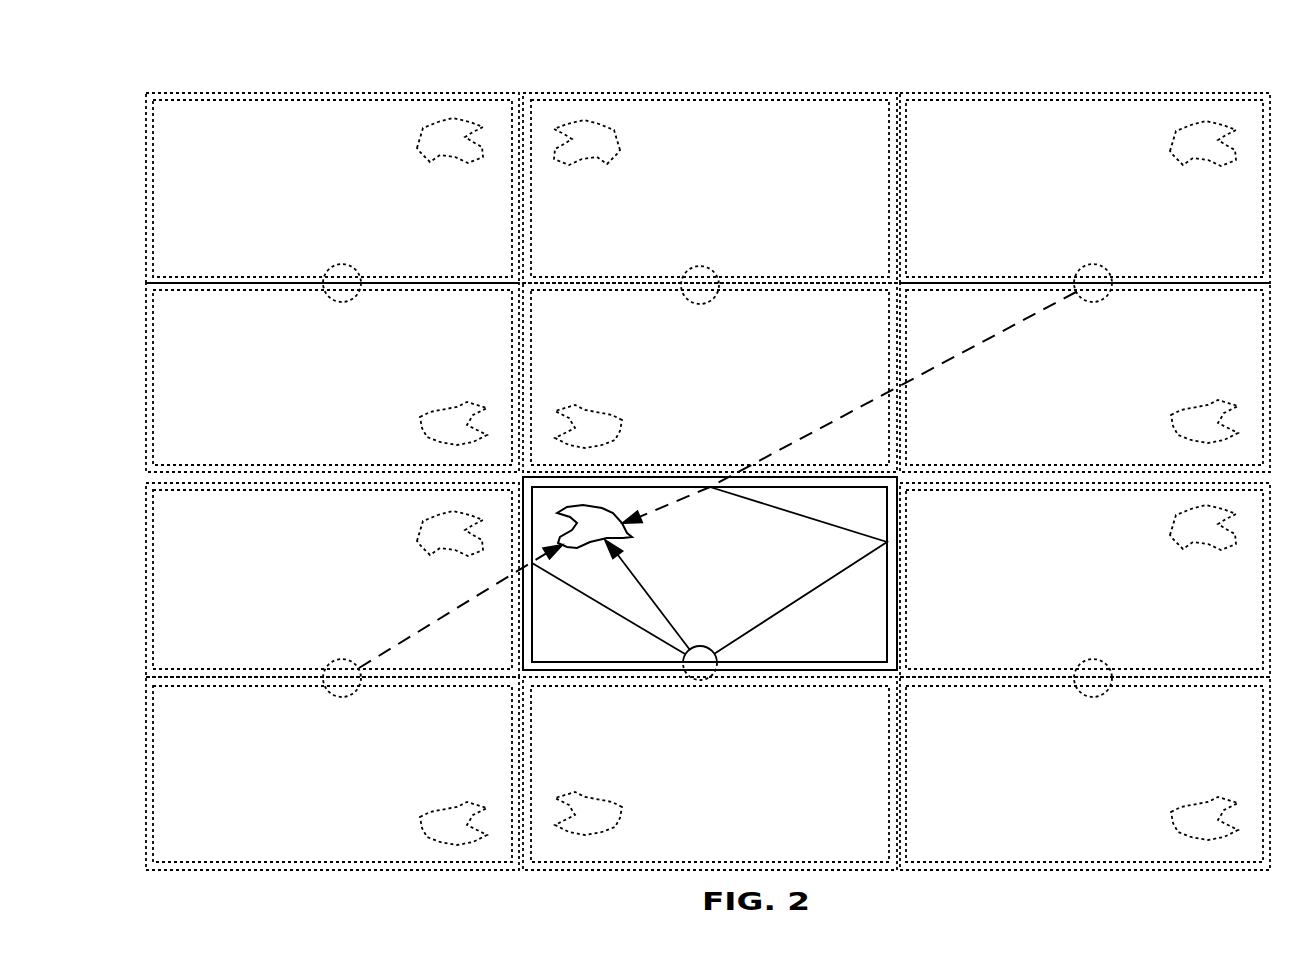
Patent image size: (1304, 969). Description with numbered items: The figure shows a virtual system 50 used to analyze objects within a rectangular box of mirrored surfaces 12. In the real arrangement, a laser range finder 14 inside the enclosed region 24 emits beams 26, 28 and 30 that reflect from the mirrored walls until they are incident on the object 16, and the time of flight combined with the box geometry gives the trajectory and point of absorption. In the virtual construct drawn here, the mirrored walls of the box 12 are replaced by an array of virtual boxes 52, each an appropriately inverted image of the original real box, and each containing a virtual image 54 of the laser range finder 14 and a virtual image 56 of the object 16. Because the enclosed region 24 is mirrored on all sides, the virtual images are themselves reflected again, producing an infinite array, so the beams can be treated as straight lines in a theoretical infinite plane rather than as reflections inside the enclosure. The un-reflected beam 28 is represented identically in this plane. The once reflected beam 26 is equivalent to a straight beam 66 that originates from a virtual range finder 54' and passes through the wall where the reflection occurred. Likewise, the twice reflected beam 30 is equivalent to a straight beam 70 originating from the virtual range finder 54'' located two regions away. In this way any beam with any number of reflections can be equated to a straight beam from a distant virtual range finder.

The rectangular box of mirrored surfaces 12 is at (800, 662).
The laser range finder 14 is at (700, 647).
The object 16 is at (632, 537).
The enclosed region 24 is at (752, 549).
The once reflected beam 26 is at (585, 592).
The un-reflected beam 28 is at (637, 568).
The twice reflected beam 30 is at (805, 595).
The virtual system 50 is at (1145, 49).
The virtual box 52 is at (410, 277).
The virtual image of the laser range finder 54 is at (742, 508).
The virtual range finder 54' is at (368, 654).
The virtual range finder two regions away 54'' is at (1124, 303).
The virtual image of the object 56 is at (428, 152).
The beam originating from virtual range finder 66 is at (440, 617).
The beam originating from distant virtual range finder 70 is at (985, 356).